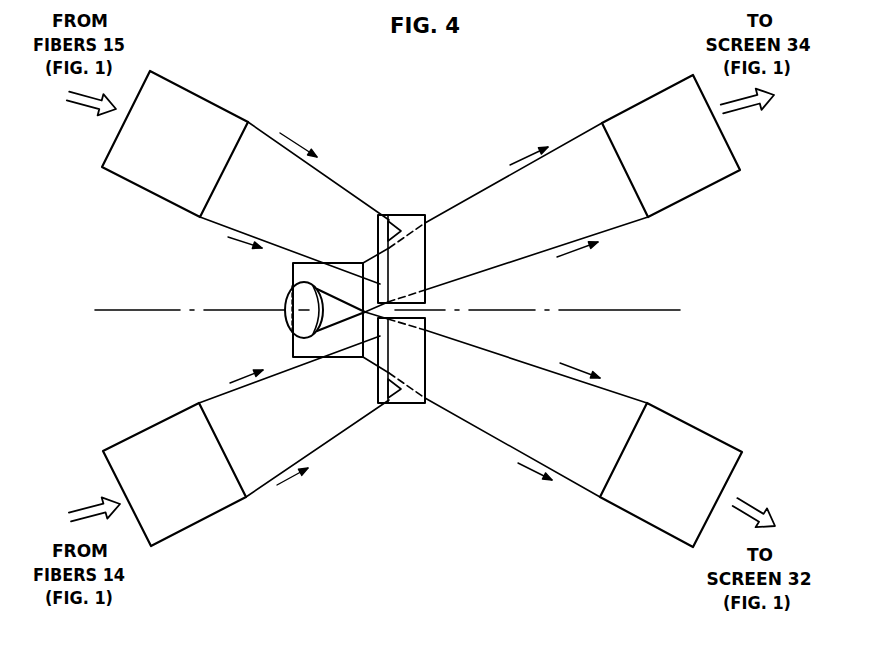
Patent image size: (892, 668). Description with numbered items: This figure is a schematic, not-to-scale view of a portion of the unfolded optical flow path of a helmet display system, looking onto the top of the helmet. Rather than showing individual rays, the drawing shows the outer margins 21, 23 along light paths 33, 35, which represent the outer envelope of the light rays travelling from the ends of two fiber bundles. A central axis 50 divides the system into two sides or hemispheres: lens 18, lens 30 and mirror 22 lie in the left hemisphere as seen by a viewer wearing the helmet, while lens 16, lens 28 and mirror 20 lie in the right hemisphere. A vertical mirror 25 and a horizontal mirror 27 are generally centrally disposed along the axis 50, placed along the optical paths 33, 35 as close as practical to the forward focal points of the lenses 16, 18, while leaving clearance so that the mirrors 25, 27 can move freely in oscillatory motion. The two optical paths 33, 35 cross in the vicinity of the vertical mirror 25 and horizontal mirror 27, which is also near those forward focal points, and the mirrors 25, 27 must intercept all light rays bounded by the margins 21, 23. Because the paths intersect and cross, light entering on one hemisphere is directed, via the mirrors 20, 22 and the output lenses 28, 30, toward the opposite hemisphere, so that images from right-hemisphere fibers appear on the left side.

The lens 16 is at (166, 482).
The lens 18 is at (164, 148).
The mirror 20 is at (403, 412).
The outer margin 21 is at (470, 197).
The mirror 22 is at (403, 213).
The outer margin 23 is at (345, 189).
The vertical mirror 25 is at (290, 348).
The horizontal mirror 27 is at (284, 297).
The lens 28 is at (659, 482).
The lens 30 is at (658, 150).
The light path 33 is at (546, 207).
The light path 35 is at (257, 196).
The central axis 50 is at (672, 308).